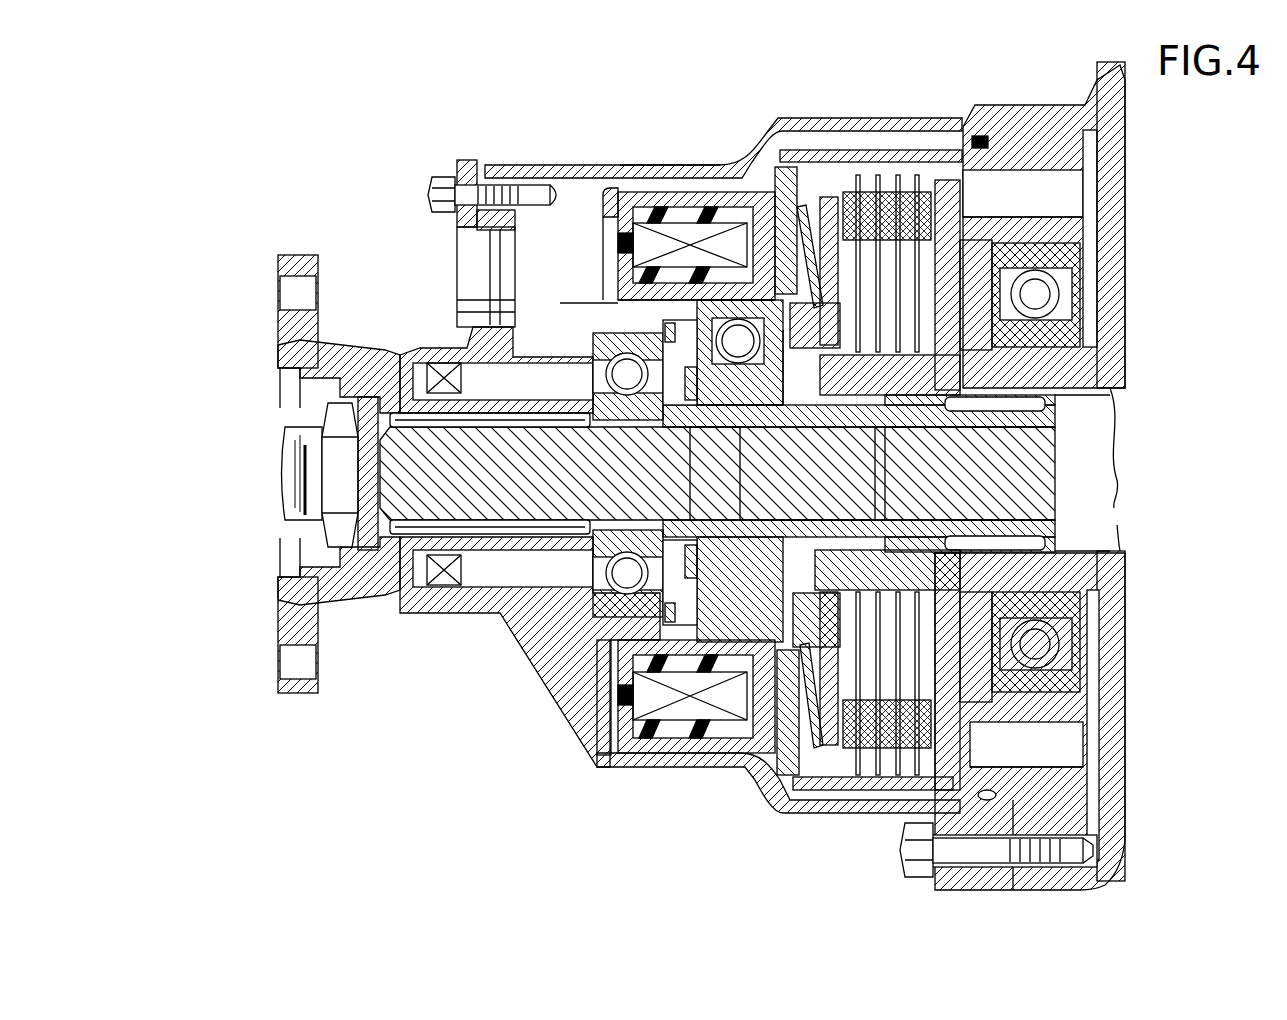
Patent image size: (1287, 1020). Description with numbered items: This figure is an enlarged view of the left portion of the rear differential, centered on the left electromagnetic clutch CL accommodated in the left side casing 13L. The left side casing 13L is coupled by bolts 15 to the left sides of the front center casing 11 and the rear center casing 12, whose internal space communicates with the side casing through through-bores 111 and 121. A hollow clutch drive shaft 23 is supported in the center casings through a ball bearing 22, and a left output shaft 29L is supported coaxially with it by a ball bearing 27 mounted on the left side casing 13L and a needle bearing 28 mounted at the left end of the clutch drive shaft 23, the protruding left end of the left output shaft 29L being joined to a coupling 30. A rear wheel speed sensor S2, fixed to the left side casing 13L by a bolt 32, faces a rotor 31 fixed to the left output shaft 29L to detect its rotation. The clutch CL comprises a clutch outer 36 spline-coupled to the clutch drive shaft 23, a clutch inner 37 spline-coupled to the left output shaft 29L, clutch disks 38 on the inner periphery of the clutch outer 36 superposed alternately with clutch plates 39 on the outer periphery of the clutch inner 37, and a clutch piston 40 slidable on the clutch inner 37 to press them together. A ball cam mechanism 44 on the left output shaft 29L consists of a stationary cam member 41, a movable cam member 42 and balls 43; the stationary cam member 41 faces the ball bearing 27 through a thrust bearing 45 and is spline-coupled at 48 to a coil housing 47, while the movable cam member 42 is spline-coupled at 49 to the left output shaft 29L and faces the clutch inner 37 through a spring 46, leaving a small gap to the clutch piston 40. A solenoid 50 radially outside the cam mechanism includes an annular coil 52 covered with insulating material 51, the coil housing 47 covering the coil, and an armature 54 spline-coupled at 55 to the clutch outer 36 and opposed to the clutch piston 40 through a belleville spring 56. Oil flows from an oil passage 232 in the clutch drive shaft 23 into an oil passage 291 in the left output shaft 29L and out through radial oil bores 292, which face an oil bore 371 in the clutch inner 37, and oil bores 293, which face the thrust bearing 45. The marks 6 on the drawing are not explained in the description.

The gap 6 is at (752, 262).
The front center casing 11 is at (1047, 88).
The through-bores 111 is at (1020, 170).
The rear center casing 12 is at (1128, 872).
The through-bores 121 is at (1033, 744).
The left side casing 13L is at (575, 158).
The bolts 15 is at (905, 858).
The ball bearings 22 is at (1047, 293).
The clutch drive shaft 23 is at (1135, 325).
The oil passage 232 is at (1104, 395).
The ball bearing 27 is at (628, 582).
The needle bearing 28 is at (1015, 537).
The left output shaft 29L is at (717, 473).
The oil passage 291 is at (828, 502).
The oil bores 292 is at (960, 400).
The oil bores 293 is at (686, 425).
The coupling 30 is at (283, 337).
The rotor 31 is at (572, 578).
The bolt 32 is at (442, 215).
The clutch outer 36 is at (850, 150).
The clutch inner 37 is at (862, 398).
The oil bore 371 is at (1005, 400).
The clutch disks 38 is at (900, 140).
The clutch plates 39 is at (915, 295).
The clutch piston 40 is at (866, 228).
The stationary cam member 41 is at (700, 340).
The movable cam member 42 is at (790, 340).
The balls 43 is at (752, 415).
The ball cam mechanism 44 is at (760, 402).
The thrust bearing 45 is at (630, 400).
The spring 46 is at (840, 395).
The coil housing 47 is at (655, 200).
The spline coupling 48 is at (683, 472).
The spline coupling 49 is at (807, 390).
The solenoid 50 is at (645, 188).
The insulating material 51 is at (720, 205).
The annular coil 52 is at (618, 240).
The armature 54 is at (783, 210).
The spline coupling 55 is at (808, 258).
The belleville spring 56 is at (828, 250).
The left electromagnetic clutch CL is at (885, 290).
The rear wheel speed sensor S2 is at (566, 290).